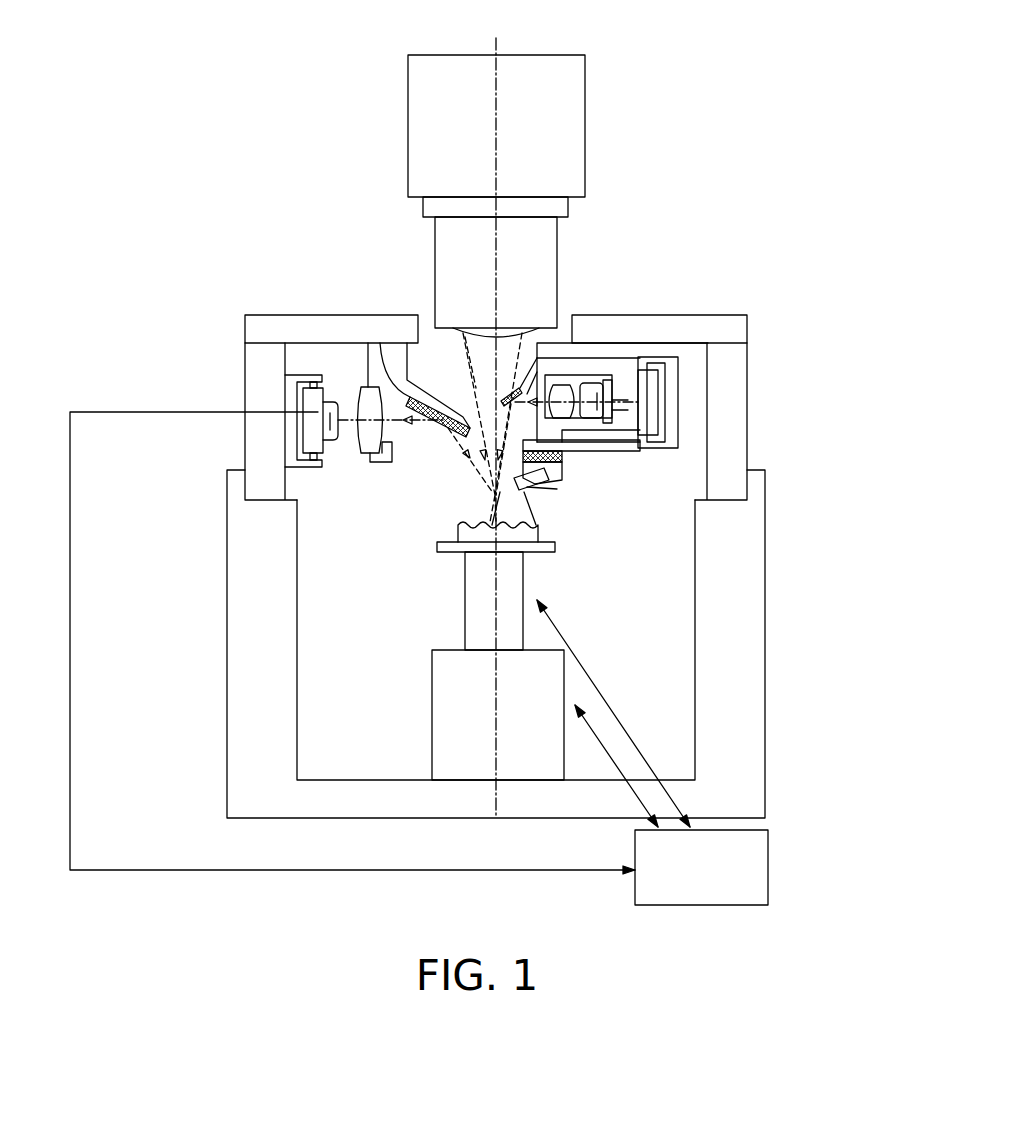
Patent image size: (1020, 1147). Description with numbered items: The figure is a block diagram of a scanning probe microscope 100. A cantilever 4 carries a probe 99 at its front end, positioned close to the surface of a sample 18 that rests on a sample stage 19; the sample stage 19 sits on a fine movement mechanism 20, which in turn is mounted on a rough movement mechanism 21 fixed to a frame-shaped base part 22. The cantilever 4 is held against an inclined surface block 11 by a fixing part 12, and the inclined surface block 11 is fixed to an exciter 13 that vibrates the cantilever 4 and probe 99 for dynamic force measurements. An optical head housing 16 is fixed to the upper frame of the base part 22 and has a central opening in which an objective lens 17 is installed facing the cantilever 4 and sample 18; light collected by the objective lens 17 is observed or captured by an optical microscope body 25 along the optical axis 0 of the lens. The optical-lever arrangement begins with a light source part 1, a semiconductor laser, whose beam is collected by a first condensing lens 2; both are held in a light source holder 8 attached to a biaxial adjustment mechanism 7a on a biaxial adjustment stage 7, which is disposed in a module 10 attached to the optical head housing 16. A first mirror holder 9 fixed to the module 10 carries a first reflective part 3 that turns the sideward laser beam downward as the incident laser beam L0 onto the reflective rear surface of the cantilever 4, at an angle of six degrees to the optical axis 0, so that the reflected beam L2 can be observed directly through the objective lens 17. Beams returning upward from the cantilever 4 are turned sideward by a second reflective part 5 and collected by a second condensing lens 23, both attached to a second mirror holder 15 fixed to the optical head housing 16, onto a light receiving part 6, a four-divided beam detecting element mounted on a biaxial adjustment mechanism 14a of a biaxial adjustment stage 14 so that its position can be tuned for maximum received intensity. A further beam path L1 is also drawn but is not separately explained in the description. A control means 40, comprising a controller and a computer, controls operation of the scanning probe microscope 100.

The scanning probe microscope 100 is at (783, 143).
The optical axis 0 is at (504, 415).
The optical microscope body 25 is at (422, 85).
The objective lens 17 is at (447, 225).
The second mirror holder 15 is at (369, 369).
The optical head housing 16 is at (257, 322).
The base part 22 is at (249, 754).
The sample 18 is at (336, 651).
The sample stage 19 is at (429, 539).
The fine movement mechanism 20 is at (465, 585).
The rough movement mechanism 21 is at (432, 704).
The probe 99 is at (487, 485).
The biaxial adjustment stage on beam-receiving side 14 is at (282, 431).
The biaxial adjustment mechanism on beam-receiving side 14a is at (302, 419).
The light receiving part 6 is at (312, 405).
The second reflective part 5 is at (359, 389).
The second condensing lens 23 is at (372, 392).
The incident laser beam L0 is at (494, 422).
The measurement light L1 is at (452, 440).
The reflected beam L2 is at (456, 363).
The first mirror holder 9 is at (535, 372).
The light source holder 8 is at (560, 378).
The first reflective part 3 is at (497, 382).
The first condensing lens 2 is at (575, 379).
The light source part 1 is at (599, 389).
The biaxial adjustment stage on light source side 7 is at (667, 412).
The biaxial adjustment mechanism on light source side 7a is at (642, 397).
The cantilever 4 is at (694, 602).
The module on light source side 10 is at (609, 437).
The exciter 13 is at (555, 449).
The inclined surface block 11 is at (555, 460).
The fixing part 12 is at (545, 468).
The control means 40 is at (762, 864).